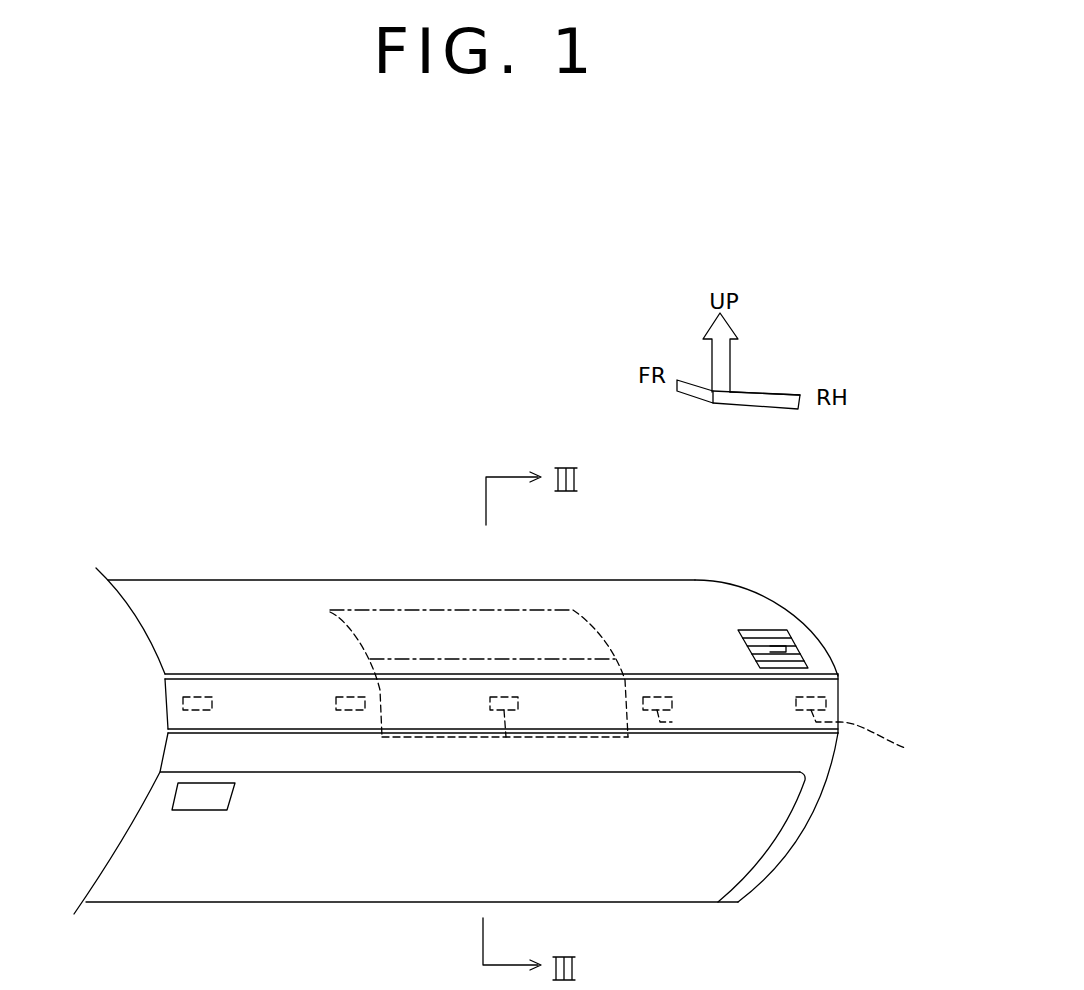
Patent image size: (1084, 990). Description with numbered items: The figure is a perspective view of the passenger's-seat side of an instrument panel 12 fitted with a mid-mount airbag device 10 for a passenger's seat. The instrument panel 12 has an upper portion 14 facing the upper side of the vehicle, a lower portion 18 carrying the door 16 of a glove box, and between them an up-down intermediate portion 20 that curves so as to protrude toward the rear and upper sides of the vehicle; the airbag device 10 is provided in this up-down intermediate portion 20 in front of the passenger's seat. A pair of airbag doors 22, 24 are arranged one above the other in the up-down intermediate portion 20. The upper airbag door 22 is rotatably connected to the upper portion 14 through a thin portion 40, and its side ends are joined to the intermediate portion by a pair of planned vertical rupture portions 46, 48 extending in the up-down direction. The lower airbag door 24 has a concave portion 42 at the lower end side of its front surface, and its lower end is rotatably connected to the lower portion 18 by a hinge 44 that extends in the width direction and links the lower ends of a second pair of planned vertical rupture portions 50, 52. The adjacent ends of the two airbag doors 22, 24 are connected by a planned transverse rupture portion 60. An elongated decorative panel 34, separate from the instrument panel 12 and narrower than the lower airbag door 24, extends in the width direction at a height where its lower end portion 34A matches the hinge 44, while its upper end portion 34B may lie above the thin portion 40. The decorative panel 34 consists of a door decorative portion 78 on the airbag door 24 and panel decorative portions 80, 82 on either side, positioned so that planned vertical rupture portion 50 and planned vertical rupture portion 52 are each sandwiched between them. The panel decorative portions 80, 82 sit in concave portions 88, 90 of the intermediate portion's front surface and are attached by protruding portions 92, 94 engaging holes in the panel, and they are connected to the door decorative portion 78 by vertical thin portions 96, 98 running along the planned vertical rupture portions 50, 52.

The airbag device for a passenger's seat 10 is at (410, 520).
The instrument panel 12 is at (275, 578).
The upper portion 14 is at (441, 590).
The door 16 is at (625, 885).
The lower portion 18 is at (777, 850).
The up-down intermediate portion 20 is at (620, 632).
The airbag door 22 is at (555, 612).
The airbag door 24 is at (497, 671).
The decorative panel 34 is at (846, 702).
The lower end portion 34A is at (190, 732).
The upper end portion 34B is at (190, 673).
The thin portion 40 is at (410, 608).
The concave portion 42 is at (575, 722).
The hinge 44 is at (475, 738).
The planned vertical rupture portion 46 is at (588, 617).
The planned vertical rupture portion 48 is at (330, 616).
The planned vertical rupture portion 50 is at (630, 700).
The planned vertical rupture portion 52 is at (360, 688).
The planned transverse rupture portion 60 is at (453, 659).
The door decorative portion 78 is at (545, 717).
The panel decorative portion 80 is at (712, 712).
The panel decorative portion 82 is at (288, 718).
The concave portion 88 is at (770, 732).
The concave portion 90 is at (318, 720).
The protruding portion 92 is at (672, 722).
The protruding portion 94 is at (207, 711).
The vertical thin portion 96 is at (657, 714).
The vertical thin portion 98 is at (410, 737).